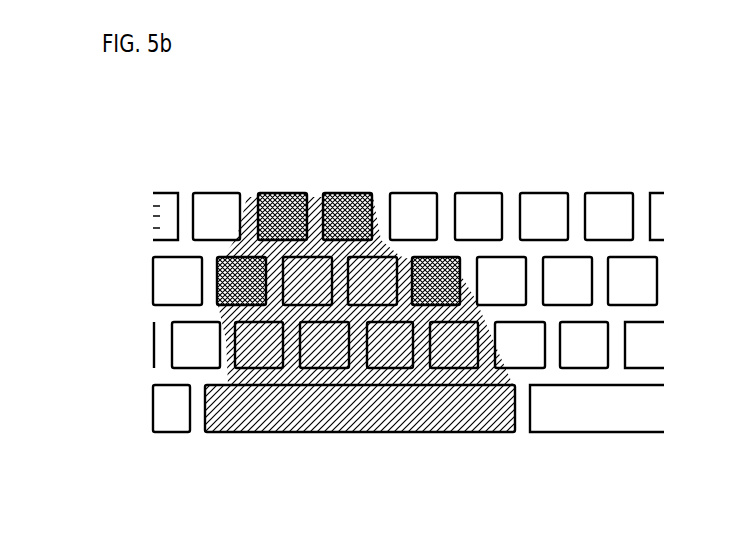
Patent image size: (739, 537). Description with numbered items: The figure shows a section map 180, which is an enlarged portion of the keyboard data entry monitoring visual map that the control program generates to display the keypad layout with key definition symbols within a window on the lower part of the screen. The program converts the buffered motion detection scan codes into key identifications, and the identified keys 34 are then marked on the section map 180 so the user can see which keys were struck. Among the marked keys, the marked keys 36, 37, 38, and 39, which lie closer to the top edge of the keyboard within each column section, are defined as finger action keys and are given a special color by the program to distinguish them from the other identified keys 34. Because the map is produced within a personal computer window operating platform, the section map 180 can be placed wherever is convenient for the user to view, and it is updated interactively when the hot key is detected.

The section map 180 is at (104, 253).
The identified keys 34 is at (328, 373).
The marked key 36 is at (223, 257).
The marked key 37 is at (281, 193).
The marked key 38 is at (341, 193).
The marked key 39 is at (421, 257).